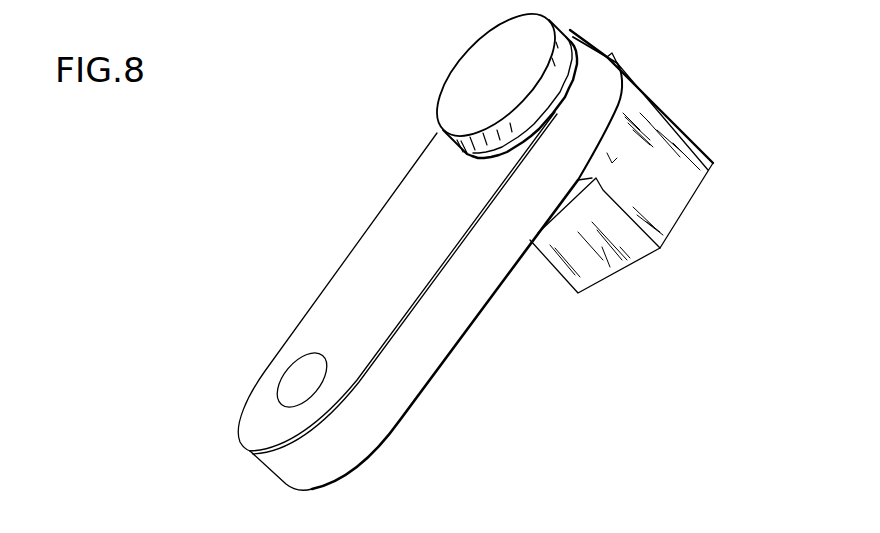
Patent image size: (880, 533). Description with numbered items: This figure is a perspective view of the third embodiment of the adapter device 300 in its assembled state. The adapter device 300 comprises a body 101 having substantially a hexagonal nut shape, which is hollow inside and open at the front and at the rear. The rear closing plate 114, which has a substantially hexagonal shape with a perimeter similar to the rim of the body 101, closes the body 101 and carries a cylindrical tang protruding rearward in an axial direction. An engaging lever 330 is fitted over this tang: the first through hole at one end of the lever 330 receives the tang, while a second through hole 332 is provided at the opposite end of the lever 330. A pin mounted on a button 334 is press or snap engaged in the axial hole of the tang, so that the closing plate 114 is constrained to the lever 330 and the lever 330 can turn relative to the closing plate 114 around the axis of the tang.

The adapter device 300 is at (555, 331).
The engaging lever 330 is at (373, 282).
The second through hole 332 is at (303, 382).
The button 334 is at (462, 78).
The body 101 is at (661, 85).
The rear closing plate 114 is at (613, 173).